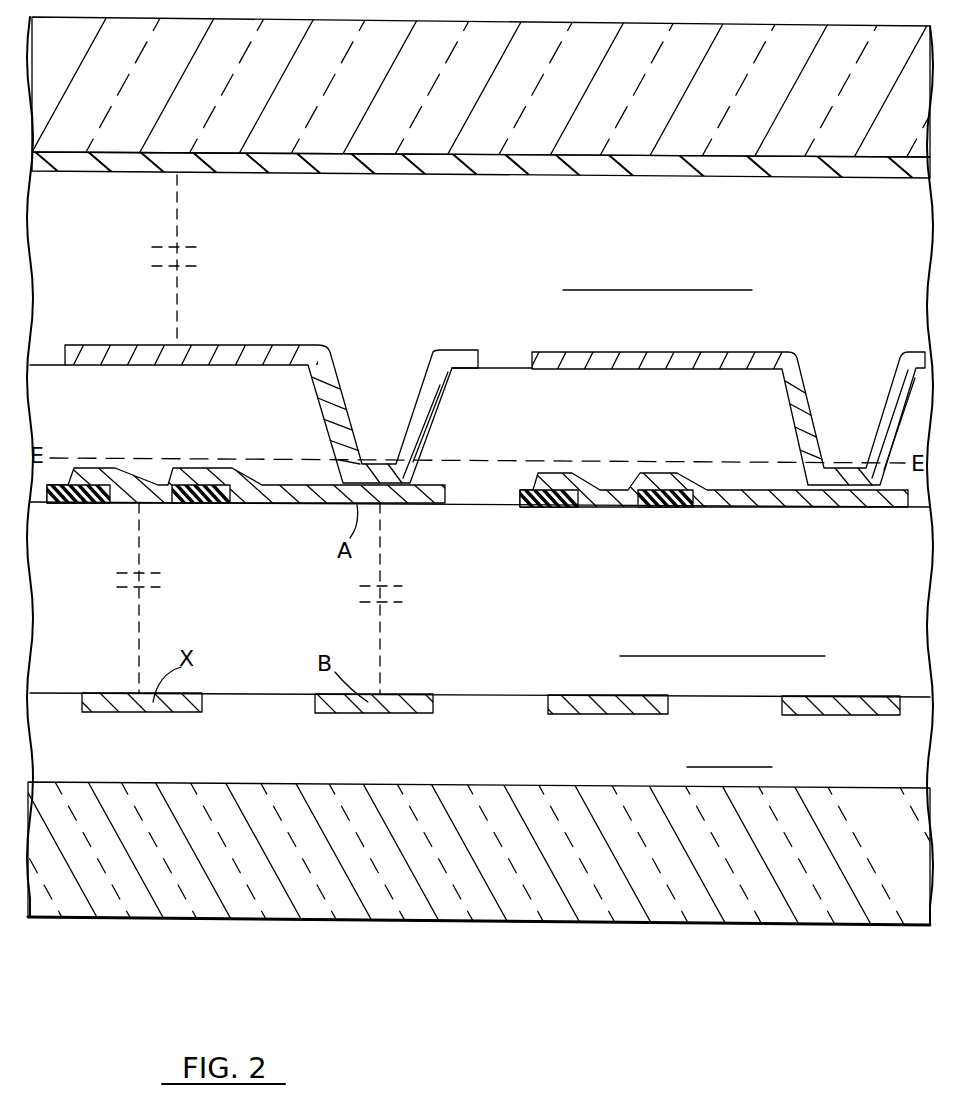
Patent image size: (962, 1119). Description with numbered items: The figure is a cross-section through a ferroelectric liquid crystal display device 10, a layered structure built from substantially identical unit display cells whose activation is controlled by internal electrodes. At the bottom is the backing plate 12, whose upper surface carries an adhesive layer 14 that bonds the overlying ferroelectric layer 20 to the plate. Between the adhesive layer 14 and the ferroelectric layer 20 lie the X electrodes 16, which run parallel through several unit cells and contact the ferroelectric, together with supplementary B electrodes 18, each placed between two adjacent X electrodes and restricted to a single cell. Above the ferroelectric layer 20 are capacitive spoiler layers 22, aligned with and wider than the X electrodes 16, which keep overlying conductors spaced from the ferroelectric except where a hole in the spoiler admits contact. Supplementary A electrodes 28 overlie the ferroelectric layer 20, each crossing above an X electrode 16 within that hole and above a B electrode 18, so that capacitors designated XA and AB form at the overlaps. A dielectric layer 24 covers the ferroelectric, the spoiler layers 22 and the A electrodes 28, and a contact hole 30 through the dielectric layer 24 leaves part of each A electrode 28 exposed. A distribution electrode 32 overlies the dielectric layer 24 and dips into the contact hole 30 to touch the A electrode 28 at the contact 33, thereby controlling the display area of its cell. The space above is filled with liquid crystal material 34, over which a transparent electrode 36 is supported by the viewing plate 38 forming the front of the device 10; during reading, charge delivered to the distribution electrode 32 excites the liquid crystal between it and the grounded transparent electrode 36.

The ferroelectric liquid crystal display device 10 is at (316, 936).
The backing plate 12 is at (382, 865).
The adhesive layer 14 is at (487, 753).
The X electrode 16 is at (163, 701).
The supplementary B electrode 18 is at (408, 702).
The ferroelectric layer 20 is at (556, 605).
The capacitive spoiler layer 22 is at (80, 493).
The dielectric layer 24 is at (206, 418).
The supplementary A electrode 28 is at (318, 498).
The contact hole 30 is at (378, 360).
The distribution electrode 32 is at (223, 347).
The contact between distribution electrode and A electrode 33 is at (368, 465).
The liquid crystal material 34 is at (482, 227).
The transparent electrode 36 is at (535, 176).
The viewing plate 38 is at (452, 82).